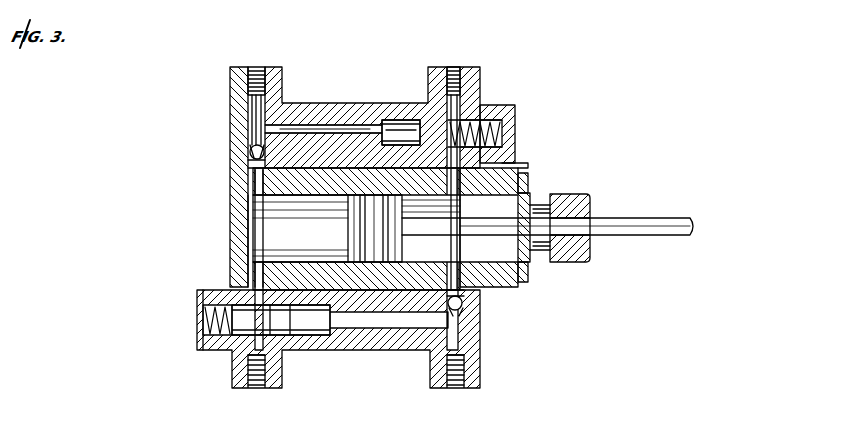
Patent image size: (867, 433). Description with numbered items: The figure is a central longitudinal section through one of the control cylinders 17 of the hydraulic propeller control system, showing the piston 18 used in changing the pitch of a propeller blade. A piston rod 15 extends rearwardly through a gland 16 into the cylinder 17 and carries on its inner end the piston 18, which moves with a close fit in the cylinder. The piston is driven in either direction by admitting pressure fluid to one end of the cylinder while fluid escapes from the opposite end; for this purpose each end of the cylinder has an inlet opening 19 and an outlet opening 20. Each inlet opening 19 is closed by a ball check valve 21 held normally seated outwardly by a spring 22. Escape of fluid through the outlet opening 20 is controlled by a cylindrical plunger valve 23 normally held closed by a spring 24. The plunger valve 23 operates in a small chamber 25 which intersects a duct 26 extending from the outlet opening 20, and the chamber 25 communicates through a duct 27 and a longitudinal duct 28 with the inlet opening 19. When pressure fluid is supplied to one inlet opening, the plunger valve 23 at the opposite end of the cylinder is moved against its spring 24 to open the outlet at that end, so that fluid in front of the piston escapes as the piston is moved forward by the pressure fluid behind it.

The piston rod 15 is at (600, 225).
The gland 16 is at (530, 190).
The cylinder 17 is at (230, 247).
The piston 18 is at (352, 228).
The inlet opening 19 is at (236, 190).
The outlet opening 20 is at (233, 282).
The ball check valve 21 is at (253, 148).
The spring 22 is at (245, 163).
The cylindrical plunger valve 23 is at (228, 350).
The spring 24 is at (515, 132).
The chamber 25 is at (390, 120).
The duct 26 is at (468, 105).
The duct 27 is at (257, 113).
The longitudinal duct 28 is at (300, 135).